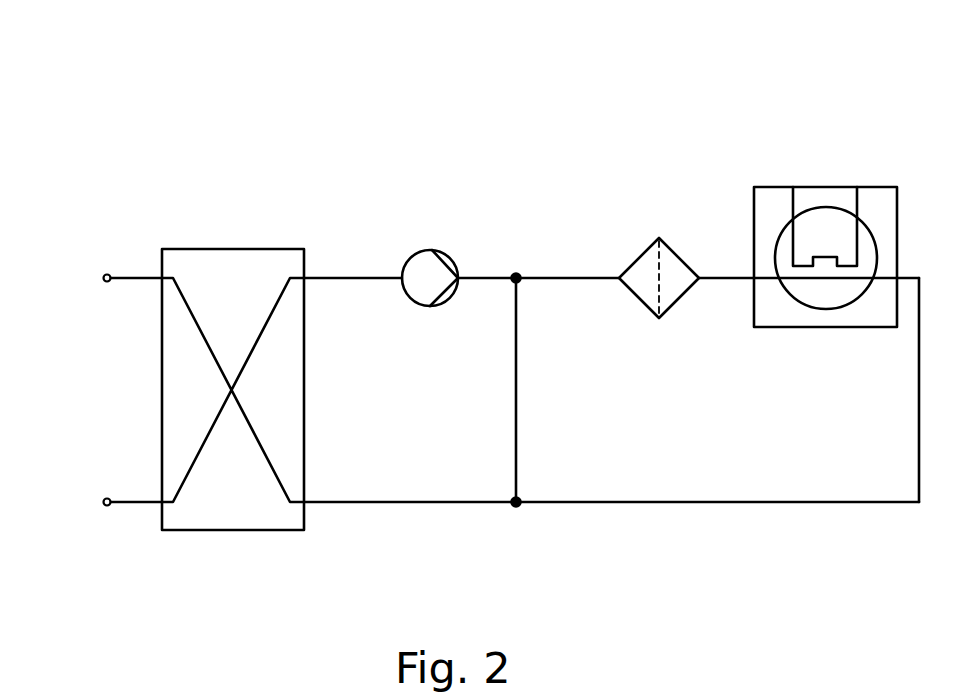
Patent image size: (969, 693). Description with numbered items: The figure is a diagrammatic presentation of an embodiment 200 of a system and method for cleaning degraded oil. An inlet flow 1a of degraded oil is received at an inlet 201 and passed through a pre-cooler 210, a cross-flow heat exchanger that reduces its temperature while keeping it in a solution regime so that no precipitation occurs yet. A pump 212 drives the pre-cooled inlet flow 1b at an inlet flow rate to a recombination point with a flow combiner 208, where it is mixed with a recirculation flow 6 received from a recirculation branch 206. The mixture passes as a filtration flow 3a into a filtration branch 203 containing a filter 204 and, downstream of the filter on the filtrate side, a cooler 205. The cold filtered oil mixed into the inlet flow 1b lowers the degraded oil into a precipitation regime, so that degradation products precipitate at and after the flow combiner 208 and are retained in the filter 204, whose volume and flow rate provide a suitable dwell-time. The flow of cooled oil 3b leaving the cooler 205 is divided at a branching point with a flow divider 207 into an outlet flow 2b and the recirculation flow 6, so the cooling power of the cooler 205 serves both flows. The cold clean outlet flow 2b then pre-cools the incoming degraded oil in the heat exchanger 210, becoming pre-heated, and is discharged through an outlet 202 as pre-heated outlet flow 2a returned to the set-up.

The embodiment 200 is at (213, 139).
The inlet 201 is at (97, 519).
The outlet 202 is at (85, 294).
The filtration branch 203 is at (919, 460).
The filter 204 is at (677, 263).
The cooler 205 is at (817, 192).
The recirculation branch 206 is at (516, 405).
The flow divider 207 is at (516, 502).
The flow combiner 208 is at (516, 278).
The pre-cooler 210 is at (258, 257).
The pump 212 is at (433, 249).
The inlet flow 1a is at (122, 475).
The inlet flow after pre-cooling 1b is at (367, 249).
The pre-heated outlet flow 2a is at (135, 249).
The outlet flow 2b is at (382, 476).
The filtration flow 3a is at (582, 249).
The flow of cooled oil 3b is at (633, 476).
The recirculation flow 6 is at (545, 373).